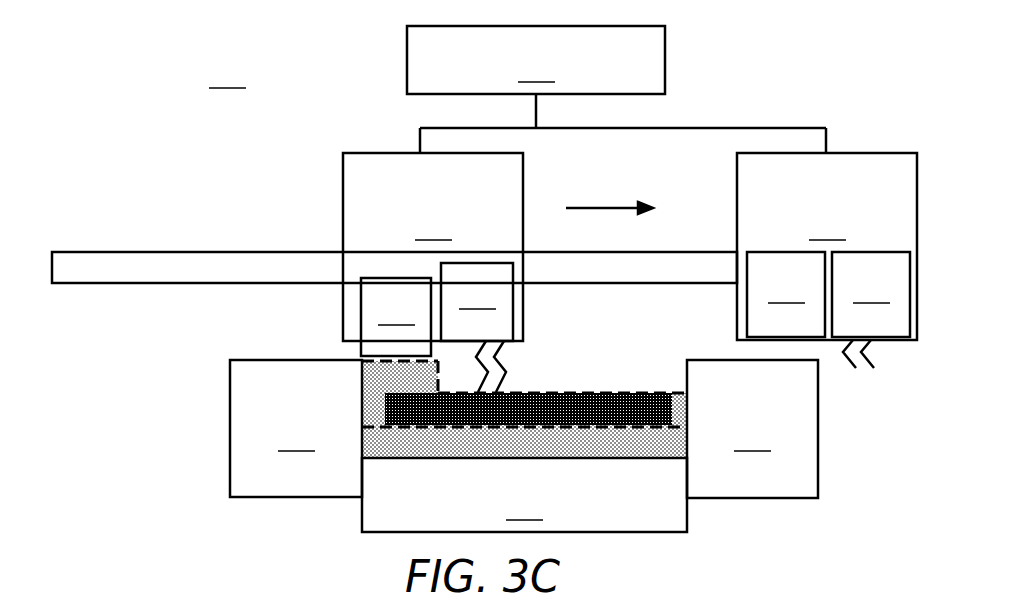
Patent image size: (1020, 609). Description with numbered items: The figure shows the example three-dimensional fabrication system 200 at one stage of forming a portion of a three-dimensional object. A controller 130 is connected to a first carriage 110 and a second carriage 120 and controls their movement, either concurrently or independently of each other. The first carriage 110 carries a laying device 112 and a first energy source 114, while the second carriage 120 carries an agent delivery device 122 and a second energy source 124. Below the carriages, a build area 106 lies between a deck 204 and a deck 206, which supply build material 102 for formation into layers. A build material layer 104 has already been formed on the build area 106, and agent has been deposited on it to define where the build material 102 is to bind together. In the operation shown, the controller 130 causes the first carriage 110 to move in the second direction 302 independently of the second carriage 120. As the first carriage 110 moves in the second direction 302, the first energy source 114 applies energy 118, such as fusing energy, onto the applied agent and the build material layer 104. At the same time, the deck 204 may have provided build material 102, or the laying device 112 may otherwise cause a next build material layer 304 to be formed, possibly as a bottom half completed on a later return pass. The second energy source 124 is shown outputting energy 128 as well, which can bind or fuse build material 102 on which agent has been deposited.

The 3D fabrication system 200 is at (394, 141).
The controller 130 is at (616, 89).
The first carriage 110 is at (433, 247).
The laying device 112 is at (396, 317).
The first energy source 114 is at (477, 302).
The second carriage 120 is at (827, 246).
The agent delivery device 122 is at (786, 294).
The second energy source 124 is at (871, 294).
The second direction 302 is at (600, 207).
The next build material layer 304 is at (356, 370).
The build material 102 is at (362, 391).
The build material layer 104 is at (636, 436).
The energy 118 is at (494, 350).
The energy 128 is at (866, 352).
The deck 204 is at (296, 428).
The deck 206 is at (752, 429).
The build area 106 is at (524, 495).